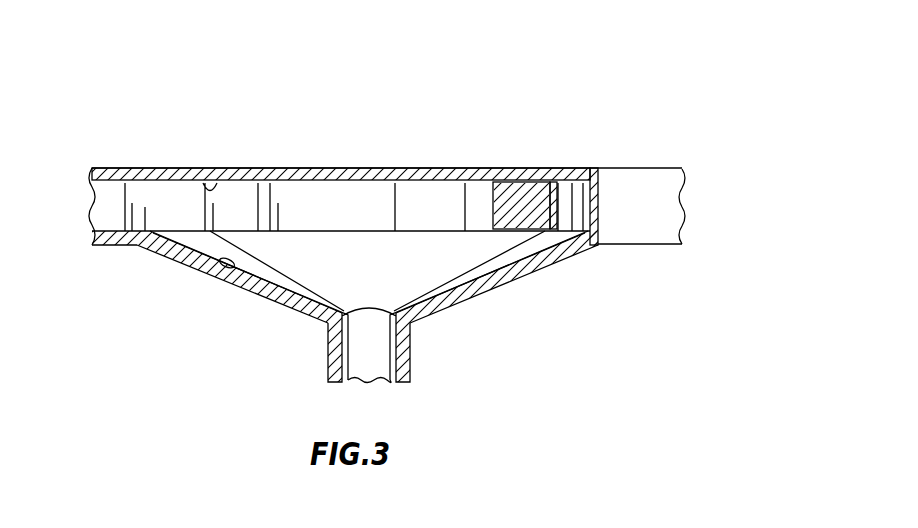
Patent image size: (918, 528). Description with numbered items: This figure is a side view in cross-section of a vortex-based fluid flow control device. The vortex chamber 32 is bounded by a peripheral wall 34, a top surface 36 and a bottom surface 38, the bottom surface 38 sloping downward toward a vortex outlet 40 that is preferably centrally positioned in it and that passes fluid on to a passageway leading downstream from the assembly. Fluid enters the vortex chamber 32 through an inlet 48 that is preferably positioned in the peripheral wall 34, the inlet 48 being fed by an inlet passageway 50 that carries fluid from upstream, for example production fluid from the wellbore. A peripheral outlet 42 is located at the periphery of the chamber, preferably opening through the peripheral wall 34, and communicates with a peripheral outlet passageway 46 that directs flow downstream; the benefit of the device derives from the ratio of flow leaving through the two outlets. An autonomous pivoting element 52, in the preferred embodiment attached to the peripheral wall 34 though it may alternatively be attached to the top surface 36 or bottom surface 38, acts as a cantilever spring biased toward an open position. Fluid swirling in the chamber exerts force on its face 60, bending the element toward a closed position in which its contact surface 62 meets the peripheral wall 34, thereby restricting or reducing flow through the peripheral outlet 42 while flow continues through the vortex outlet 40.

The vortex chamber 32 is at (260, 190).
The peripheral wall 34 is at (604, 198).
The top surface 36 is at (199, 186).
The bottom surface 38 is at (229, 264).
The vortex outlet 40 is at (363, 322).
The peripheral outlet 42 is at (573, 200).
The peripheral outlet passageway 46 is at (663, 203).
The inlet 48 is at (133, 245).
The inlet passageway 50 is at (115, 198).
The autonomous pivoting element 52 is at (523, 187).
The face 60 is at (508, 192).
The contact surface 62 is at (557, 208).